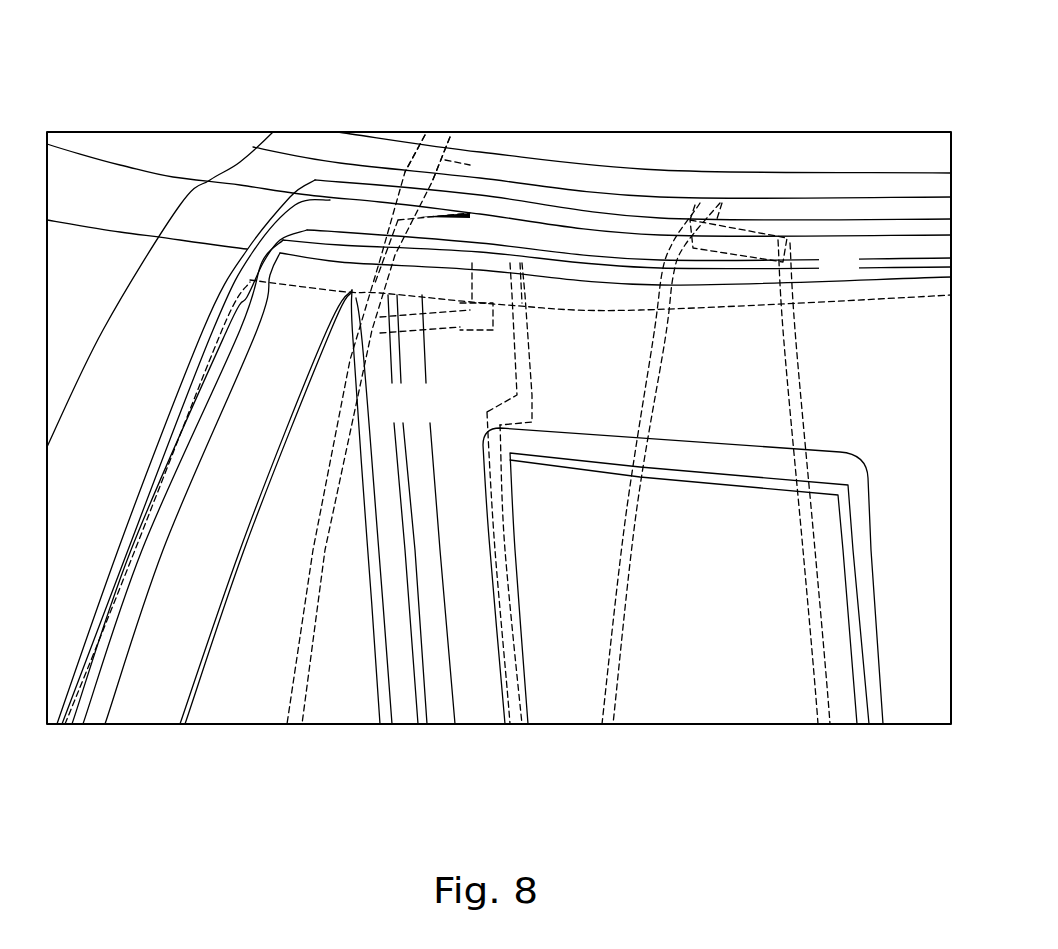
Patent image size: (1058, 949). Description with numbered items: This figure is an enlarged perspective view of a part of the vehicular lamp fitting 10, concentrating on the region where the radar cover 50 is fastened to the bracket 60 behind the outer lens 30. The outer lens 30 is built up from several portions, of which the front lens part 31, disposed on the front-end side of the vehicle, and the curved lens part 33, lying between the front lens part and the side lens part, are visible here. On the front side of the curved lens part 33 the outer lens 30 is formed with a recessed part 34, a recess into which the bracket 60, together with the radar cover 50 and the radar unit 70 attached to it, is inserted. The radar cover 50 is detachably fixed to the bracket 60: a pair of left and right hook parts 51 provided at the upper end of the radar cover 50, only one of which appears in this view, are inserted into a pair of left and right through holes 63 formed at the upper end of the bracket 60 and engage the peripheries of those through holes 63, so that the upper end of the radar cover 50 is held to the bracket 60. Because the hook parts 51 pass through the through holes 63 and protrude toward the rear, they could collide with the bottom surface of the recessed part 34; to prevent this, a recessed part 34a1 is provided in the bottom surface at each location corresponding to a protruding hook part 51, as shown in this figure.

The vehicular lamp fitting 10 is at (466, 80).
The outer lens 30 is at (83, 153).
The front lens part 31 is at (176, 158).
The curved lens part 33 is at (636, 178).
The recessed part 34 is at (496, 528).
The recessed part 34a1 is at (520, 343).
The radar cover 50 is at (328, 716).
The hook part 51 is at (421, 509).
The bracket 60 is at (837, 320).
The through hole 63 is at (517, 243).
The radar unit 70 is at (718, 452).